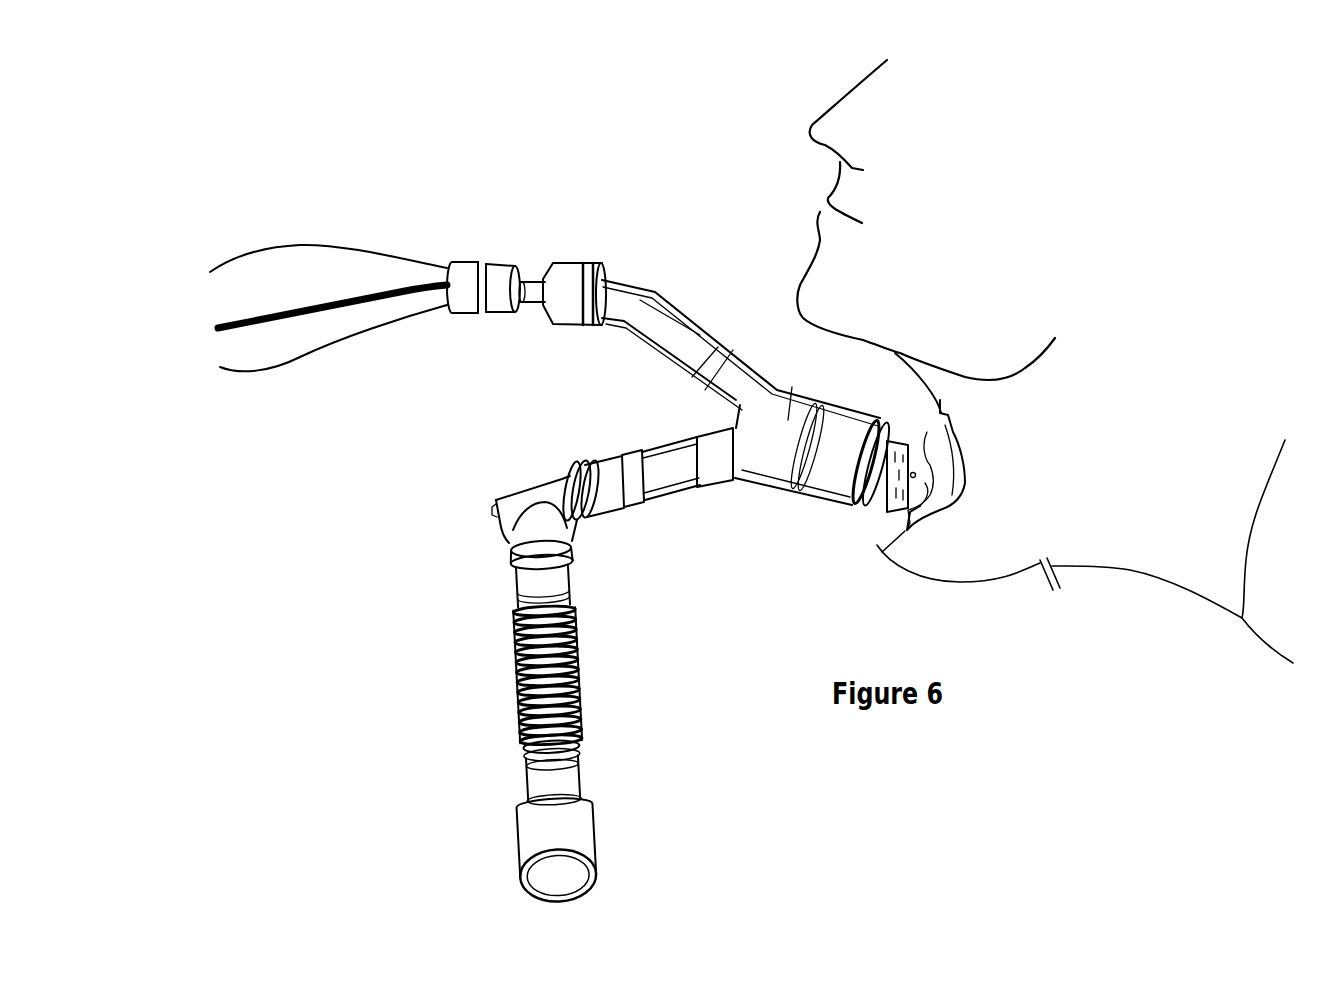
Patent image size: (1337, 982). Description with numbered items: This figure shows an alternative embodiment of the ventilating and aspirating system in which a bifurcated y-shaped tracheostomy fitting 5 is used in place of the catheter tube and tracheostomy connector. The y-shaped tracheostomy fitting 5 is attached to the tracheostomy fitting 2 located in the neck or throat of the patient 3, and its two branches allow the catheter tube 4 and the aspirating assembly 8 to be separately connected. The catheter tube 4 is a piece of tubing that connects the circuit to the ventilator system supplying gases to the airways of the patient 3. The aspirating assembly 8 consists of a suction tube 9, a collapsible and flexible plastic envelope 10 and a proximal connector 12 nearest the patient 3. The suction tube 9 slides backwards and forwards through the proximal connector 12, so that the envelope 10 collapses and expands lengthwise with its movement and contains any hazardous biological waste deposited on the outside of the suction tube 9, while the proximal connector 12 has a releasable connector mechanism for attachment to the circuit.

The tracheostomy or endotracheal fitting 2 is at (885, 510).
The patient 3 is at (863, 117).
The catheter tube 4 is at (586, 698).
The bifurcated y-shaped tracheostomy fitting 5 is at (855, 405).
The aspirating assembly 8 is at (421, 244).
The suction tube 9 is at (277, 313).
The collapsible and flexible plastic envelope 10 is at (323, 247).
The proximal connector 12 is at (573, 260).